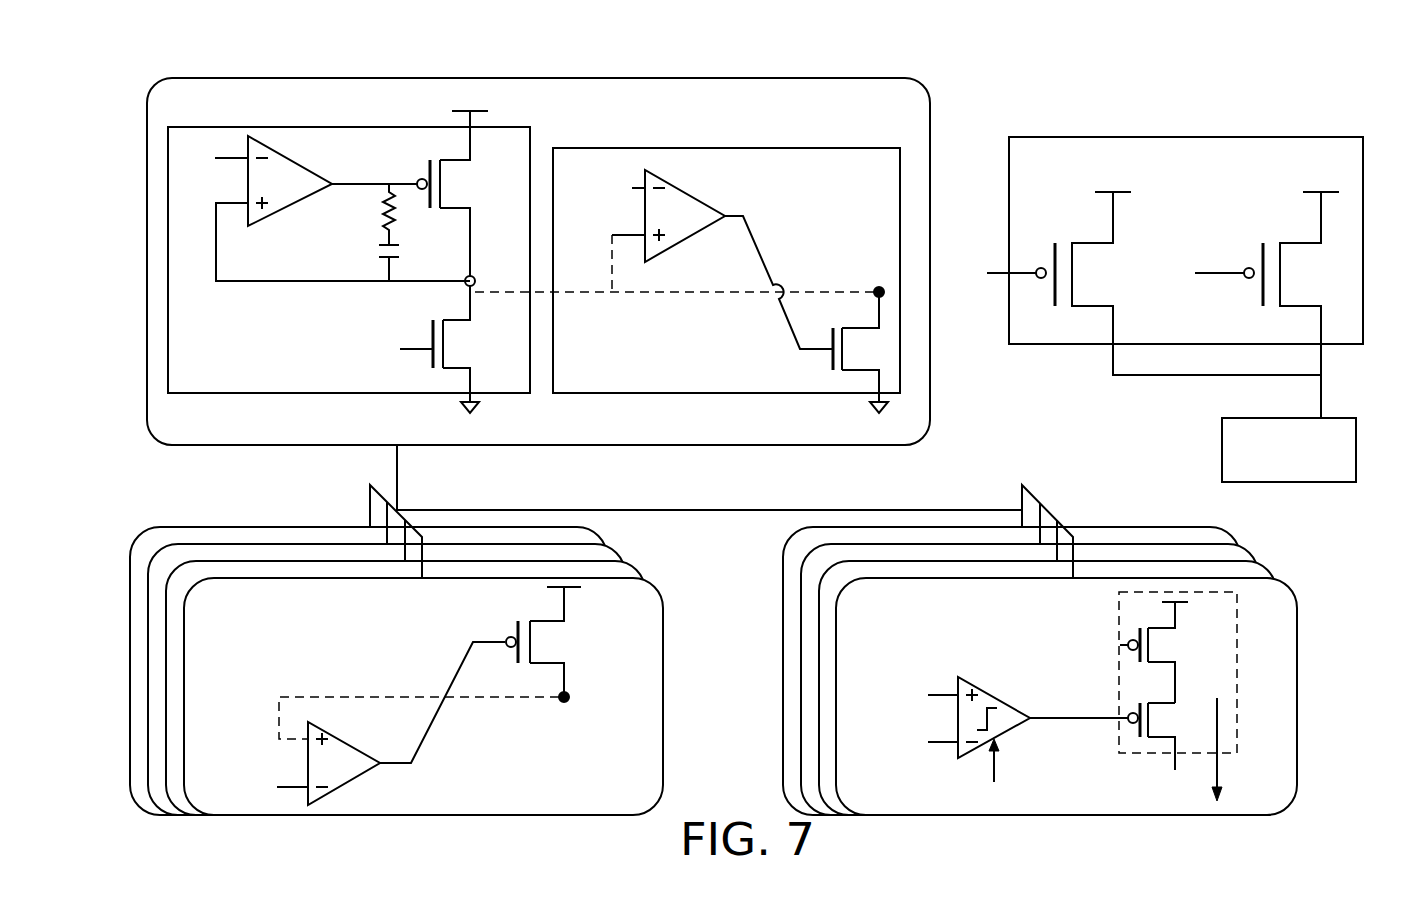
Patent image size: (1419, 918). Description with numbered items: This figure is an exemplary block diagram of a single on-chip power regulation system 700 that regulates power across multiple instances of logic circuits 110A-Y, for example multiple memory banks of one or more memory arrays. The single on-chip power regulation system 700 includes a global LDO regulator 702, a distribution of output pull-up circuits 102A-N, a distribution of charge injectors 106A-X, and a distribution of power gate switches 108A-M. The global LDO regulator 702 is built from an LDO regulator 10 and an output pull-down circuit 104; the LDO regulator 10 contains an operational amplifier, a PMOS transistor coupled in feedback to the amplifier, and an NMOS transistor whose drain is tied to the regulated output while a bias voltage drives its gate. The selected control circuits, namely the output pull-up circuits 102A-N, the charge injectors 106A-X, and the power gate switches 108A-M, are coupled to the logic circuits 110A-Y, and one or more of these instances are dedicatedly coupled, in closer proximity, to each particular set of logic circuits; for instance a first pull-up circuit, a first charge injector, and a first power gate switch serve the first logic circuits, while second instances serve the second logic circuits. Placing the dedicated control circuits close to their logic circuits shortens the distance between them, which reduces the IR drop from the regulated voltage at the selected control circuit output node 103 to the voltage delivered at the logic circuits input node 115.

The single on-chip power regulation system 700 is at (214, 52).
The global LDO regulator 702 is at (788, 78).
The LDO regulator 10 is at (368, 127).
The output pull-down circuit 104 is at (708, 148).
The selected control circuit output node 103 is at (709, 477).
The power gate switches 108A-M is at (1203, 137).
The logic circuits input node 115 is at (1368, 385).
The logic circuits 110A-Y is at (1222, 450).
The output pull-up circuits 102A-N is at (298, 527).
The charge injectors 106A-X is at (1253, 553).